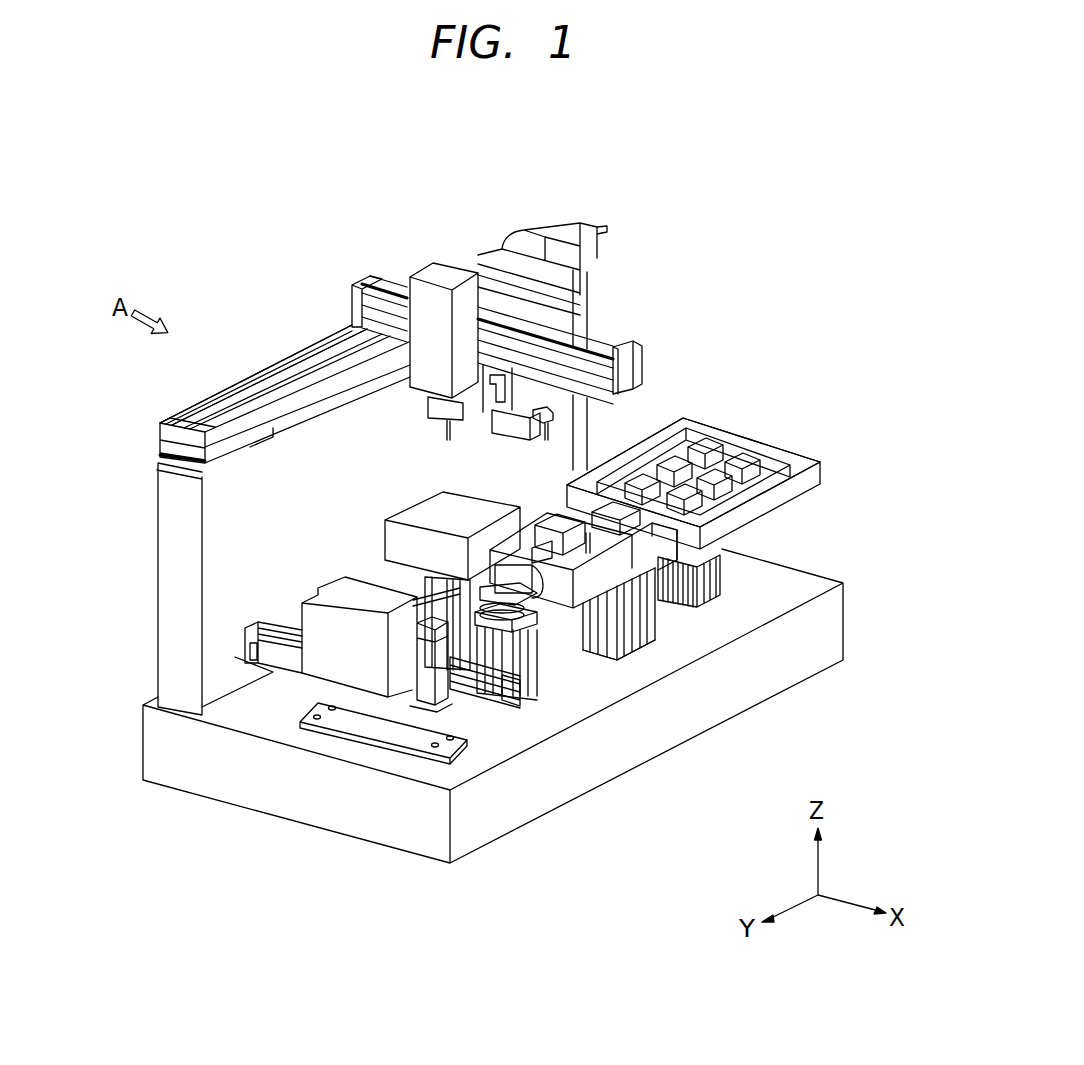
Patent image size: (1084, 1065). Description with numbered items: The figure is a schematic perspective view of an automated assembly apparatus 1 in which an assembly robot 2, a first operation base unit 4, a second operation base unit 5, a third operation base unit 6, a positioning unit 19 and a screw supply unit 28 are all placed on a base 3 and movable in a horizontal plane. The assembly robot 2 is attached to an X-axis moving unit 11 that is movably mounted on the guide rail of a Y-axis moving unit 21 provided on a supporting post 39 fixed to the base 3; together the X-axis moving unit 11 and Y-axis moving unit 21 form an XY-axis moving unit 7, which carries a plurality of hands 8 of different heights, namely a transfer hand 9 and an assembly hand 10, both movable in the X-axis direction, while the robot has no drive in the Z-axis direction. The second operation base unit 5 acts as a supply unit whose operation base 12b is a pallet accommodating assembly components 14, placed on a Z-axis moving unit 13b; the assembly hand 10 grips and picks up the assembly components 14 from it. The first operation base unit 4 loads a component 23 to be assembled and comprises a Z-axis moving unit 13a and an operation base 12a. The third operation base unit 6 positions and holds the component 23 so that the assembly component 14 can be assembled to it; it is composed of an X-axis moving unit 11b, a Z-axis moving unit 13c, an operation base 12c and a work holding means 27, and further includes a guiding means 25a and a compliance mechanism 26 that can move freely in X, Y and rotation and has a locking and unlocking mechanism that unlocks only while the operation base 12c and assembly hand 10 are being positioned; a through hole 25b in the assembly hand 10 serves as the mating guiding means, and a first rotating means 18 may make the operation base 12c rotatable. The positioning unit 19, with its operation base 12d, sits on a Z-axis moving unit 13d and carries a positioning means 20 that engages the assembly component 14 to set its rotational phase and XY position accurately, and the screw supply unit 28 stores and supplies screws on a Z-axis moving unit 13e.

The automated assembly apparatus 1 is at (742, 247).
The assembly robot 2 is at (440, 248).
The base 3 is at (820, 637).
The first operation base unit 4 is at (397, 500).
The second operation base unit 5 is at (715, 412).
The third operation base unit 6 is at (547, 702).
The XY-axis moving unit 7 is at (353, 269).
The hands 8 is at (690, 600).
The transfer hand 9 is at (507, 372).
The assembly hand 10 is at (533, 397).
The X-axis moving unit 11 is at (501, 374).
The X-axis moving unit 11b is at (498, 630).
The operation base 12a is at (202, 423).
The operation base 12b is at (777, 443).
The operation base 12c is at (635, 637).
The operation base 12d is at (705, 560).
The Z-axis moving unit 13a is at (420, 585).
The Z-axis moving unit 13b is at (715, 573).
The Z-axis moving unit 13c is at (463, 690).
The Z-axis moving unit 13d is at (663, 645).
The Z-axis moving unit 13e is at (428, 675).
The assembly components 14 is at (700, 448).
The first rotating means 18 is at (560, 590).
The positioning unit 19 is at (652, 580).
The positioning means 20 is at (613, 538).
The Y-axis moving unit 21 is at (348, 328).
The component to be assembled 23 is at (348, 342).
The guiding means 25a is at (627, 550).
The through hole 25b is at (553, 413).
The compliance mechanism 26 is at (478, 658).
The work holding means 27 is at (392, 535).
The screw supply unit 28 is at (288, 610).
The supporting post 39 is at (175, 508).